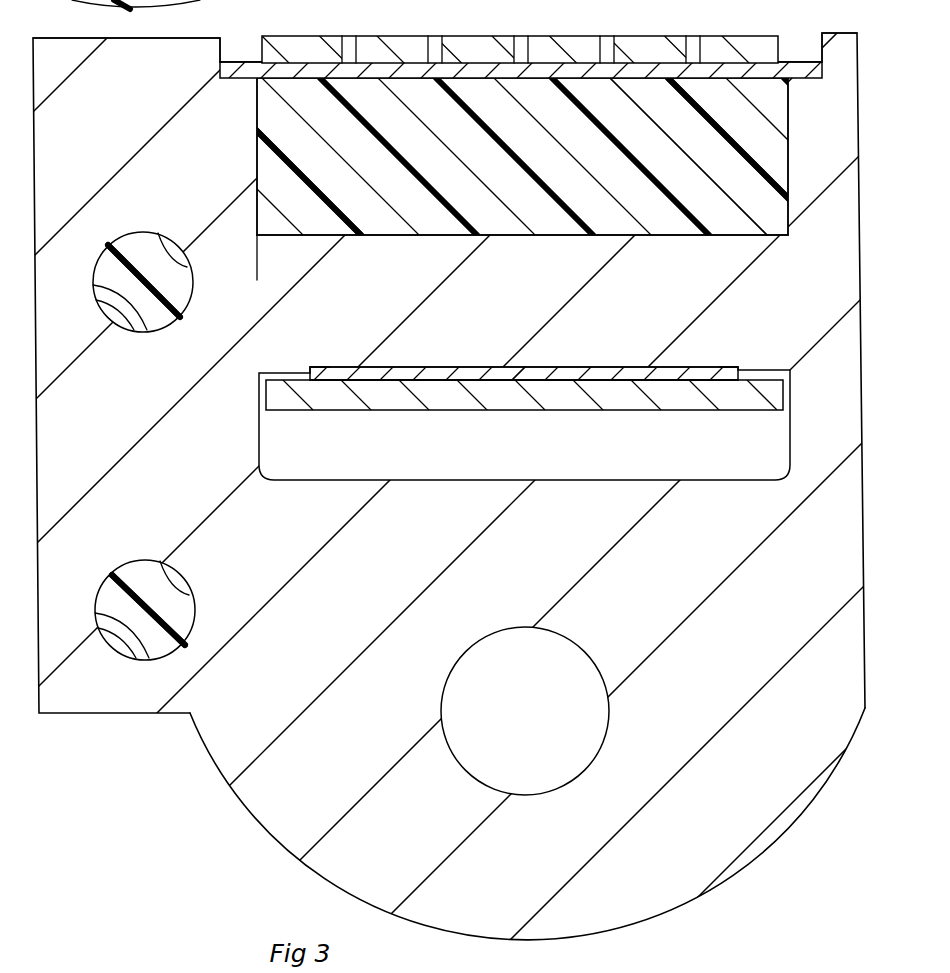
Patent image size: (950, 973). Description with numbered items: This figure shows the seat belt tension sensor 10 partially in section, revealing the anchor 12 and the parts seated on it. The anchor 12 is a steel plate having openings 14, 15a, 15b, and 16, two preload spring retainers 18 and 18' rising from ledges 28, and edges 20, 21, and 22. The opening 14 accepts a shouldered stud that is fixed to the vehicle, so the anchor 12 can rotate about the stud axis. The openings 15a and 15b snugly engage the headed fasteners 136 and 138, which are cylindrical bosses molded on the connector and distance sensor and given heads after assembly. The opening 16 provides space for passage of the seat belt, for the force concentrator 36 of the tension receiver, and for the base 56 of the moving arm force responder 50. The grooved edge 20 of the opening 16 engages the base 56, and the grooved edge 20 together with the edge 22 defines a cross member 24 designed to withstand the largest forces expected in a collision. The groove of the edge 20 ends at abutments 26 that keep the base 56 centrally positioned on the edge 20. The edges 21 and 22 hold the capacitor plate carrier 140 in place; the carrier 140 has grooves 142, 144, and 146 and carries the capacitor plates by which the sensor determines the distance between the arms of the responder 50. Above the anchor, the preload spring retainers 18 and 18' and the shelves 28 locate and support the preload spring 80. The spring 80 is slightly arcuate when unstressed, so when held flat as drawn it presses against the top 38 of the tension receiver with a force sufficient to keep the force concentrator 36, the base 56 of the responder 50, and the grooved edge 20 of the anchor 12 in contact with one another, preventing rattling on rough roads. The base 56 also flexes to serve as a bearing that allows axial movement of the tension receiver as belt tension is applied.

The seat belt tension sensor 10 is at (776, 852).
The anchor 12 is at (786, 830).
The opening 14 is at (545, 735).
The opening 15a is at (128, 652).
The opening 15b is at (147, 330).
The opening 16 is at (546, 453).
The preload spring retainer 18 is at (840, 52).
The preload spring retainer 18' is at (126, 55).
The grooved edge 20 is at (606, 372).
The edge 21 is at (258, 172).
The edge 22 is at (660, 235).
The cross member 24 is at (428, 327).
The abutments 26 is at (313, 372).
The ledges 28 is at (243, 76).
The force concentrator 36 is at (382, 410).
The top 38 is at (418, 35).
The moving arm force responder 50 is at (495, 384).
The base 56 is at (540, 375).
The preload spring 80 is at (652, 62).
The headed fastener 136 is at (173, 613).
The headed fastener 138 is at (173, 290).
The capacitor plate carrier 140 is at (470, 165).
The groove 142 is at (255, 108).
The groove 144 is at (790, 100).
The groove 146 is at (575, 238).